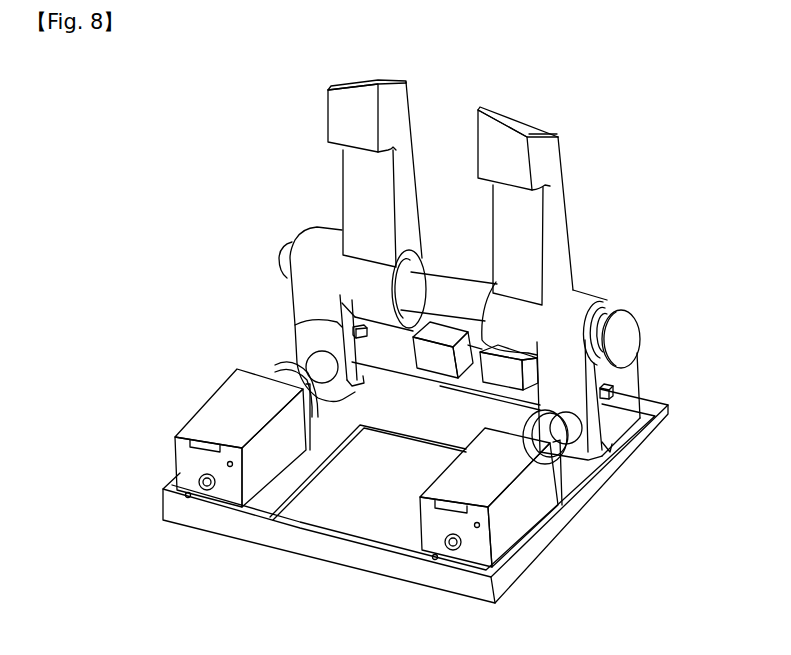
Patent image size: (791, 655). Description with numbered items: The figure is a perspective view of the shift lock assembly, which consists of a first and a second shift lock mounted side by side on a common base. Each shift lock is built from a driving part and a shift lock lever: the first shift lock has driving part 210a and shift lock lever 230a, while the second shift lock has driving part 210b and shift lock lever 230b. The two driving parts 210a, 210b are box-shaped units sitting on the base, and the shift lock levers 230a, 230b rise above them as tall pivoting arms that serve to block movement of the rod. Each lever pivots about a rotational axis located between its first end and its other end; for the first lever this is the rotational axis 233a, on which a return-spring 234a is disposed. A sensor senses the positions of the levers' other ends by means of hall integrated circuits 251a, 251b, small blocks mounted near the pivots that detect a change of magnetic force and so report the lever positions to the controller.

The driving part 210a is at (542, 514).
The driving part 210b is at (200, 405).
The shift lock lever 230a is at (572, 207).
The shift lock lever 230b is at (325, 120).
The rotational axis 233a is at (628, 343).
The return-spring 234a is at (610, 306).
The hall integrated circuit 251a is at (612, 395).
The hall integrated circuit 251b is at (353, 330).